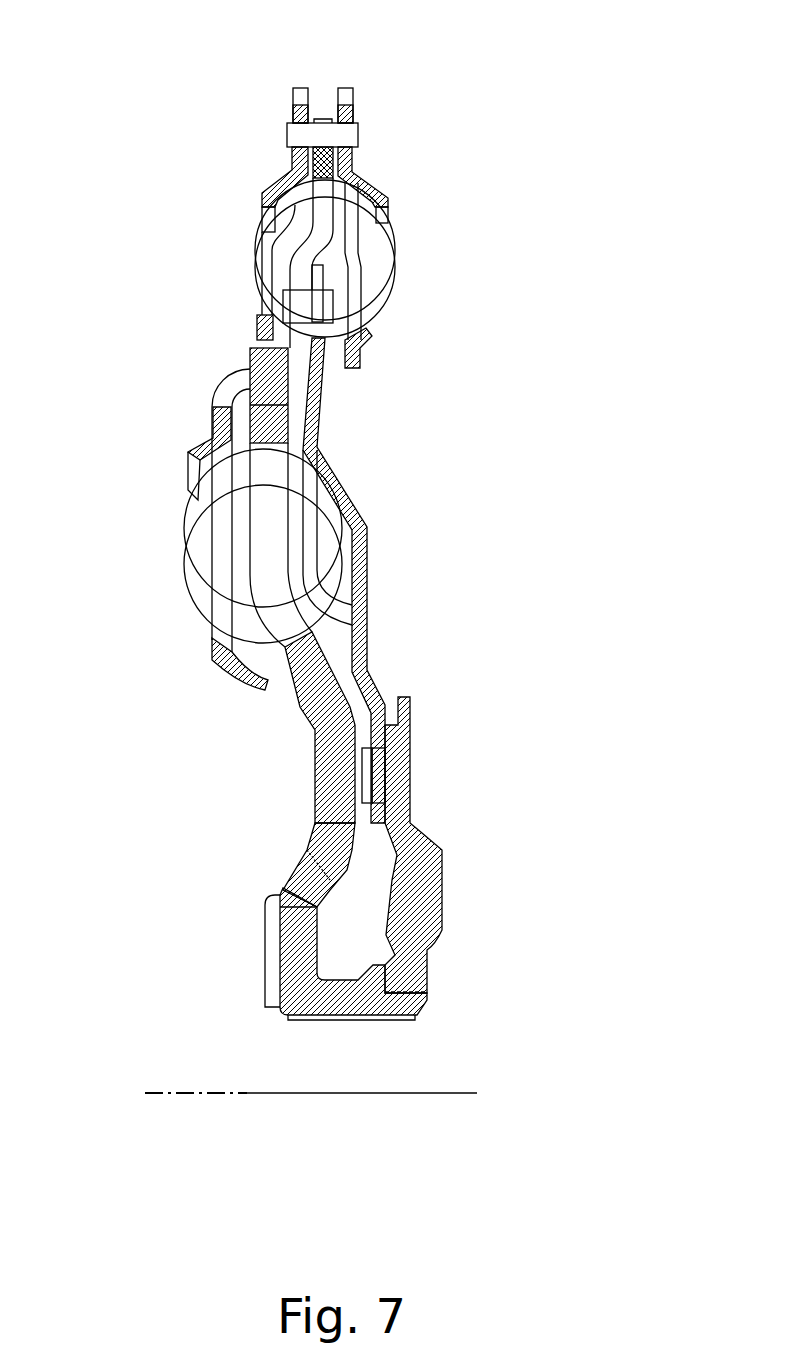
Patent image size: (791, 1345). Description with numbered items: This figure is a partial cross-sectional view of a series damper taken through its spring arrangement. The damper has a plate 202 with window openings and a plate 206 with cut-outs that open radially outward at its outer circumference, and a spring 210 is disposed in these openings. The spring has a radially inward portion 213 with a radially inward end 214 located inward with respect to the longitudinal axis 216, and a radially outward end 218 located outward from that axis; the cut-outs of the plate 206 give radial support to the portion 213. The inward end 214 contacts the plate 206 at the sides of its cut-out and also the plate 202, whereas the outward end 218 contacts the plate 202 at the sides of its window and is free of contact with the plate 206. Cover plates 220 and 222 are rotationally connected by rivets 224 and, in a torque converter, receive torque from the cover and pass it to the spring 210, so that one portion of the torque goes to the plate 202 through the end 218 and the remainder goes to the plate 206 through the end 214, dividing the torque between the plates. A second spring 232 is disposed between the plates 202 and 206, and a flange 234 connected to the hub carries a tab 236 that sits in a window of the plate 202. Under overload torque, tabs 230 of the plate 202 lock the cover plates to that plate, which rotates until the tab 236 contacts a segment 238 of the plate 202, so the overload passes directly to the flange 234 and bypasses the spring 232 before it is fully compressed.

The plate 202 is at (197, 427).
The plate 206 is at (363, 503).
The spring 210 is at (393, 260).
The radially inward portion 213 is at (414, 326).
The radially inward end 214 is at (336, 345).
The longitudinal axis 216 is at (290, 1093).
The radially outward end 218 is at (285, 200).
The cover plate 220 is at (300, 85).
The cover plate 222 is at (345, 88).
The rivet 224 is at (360, 133).
The tab 230 is at (322, 120).
The spring 232 is at (183, 582).
The flange 234 is at (307, 705).
The tab 236 is at (253, 345).
The segment 238 is at (233, 377).